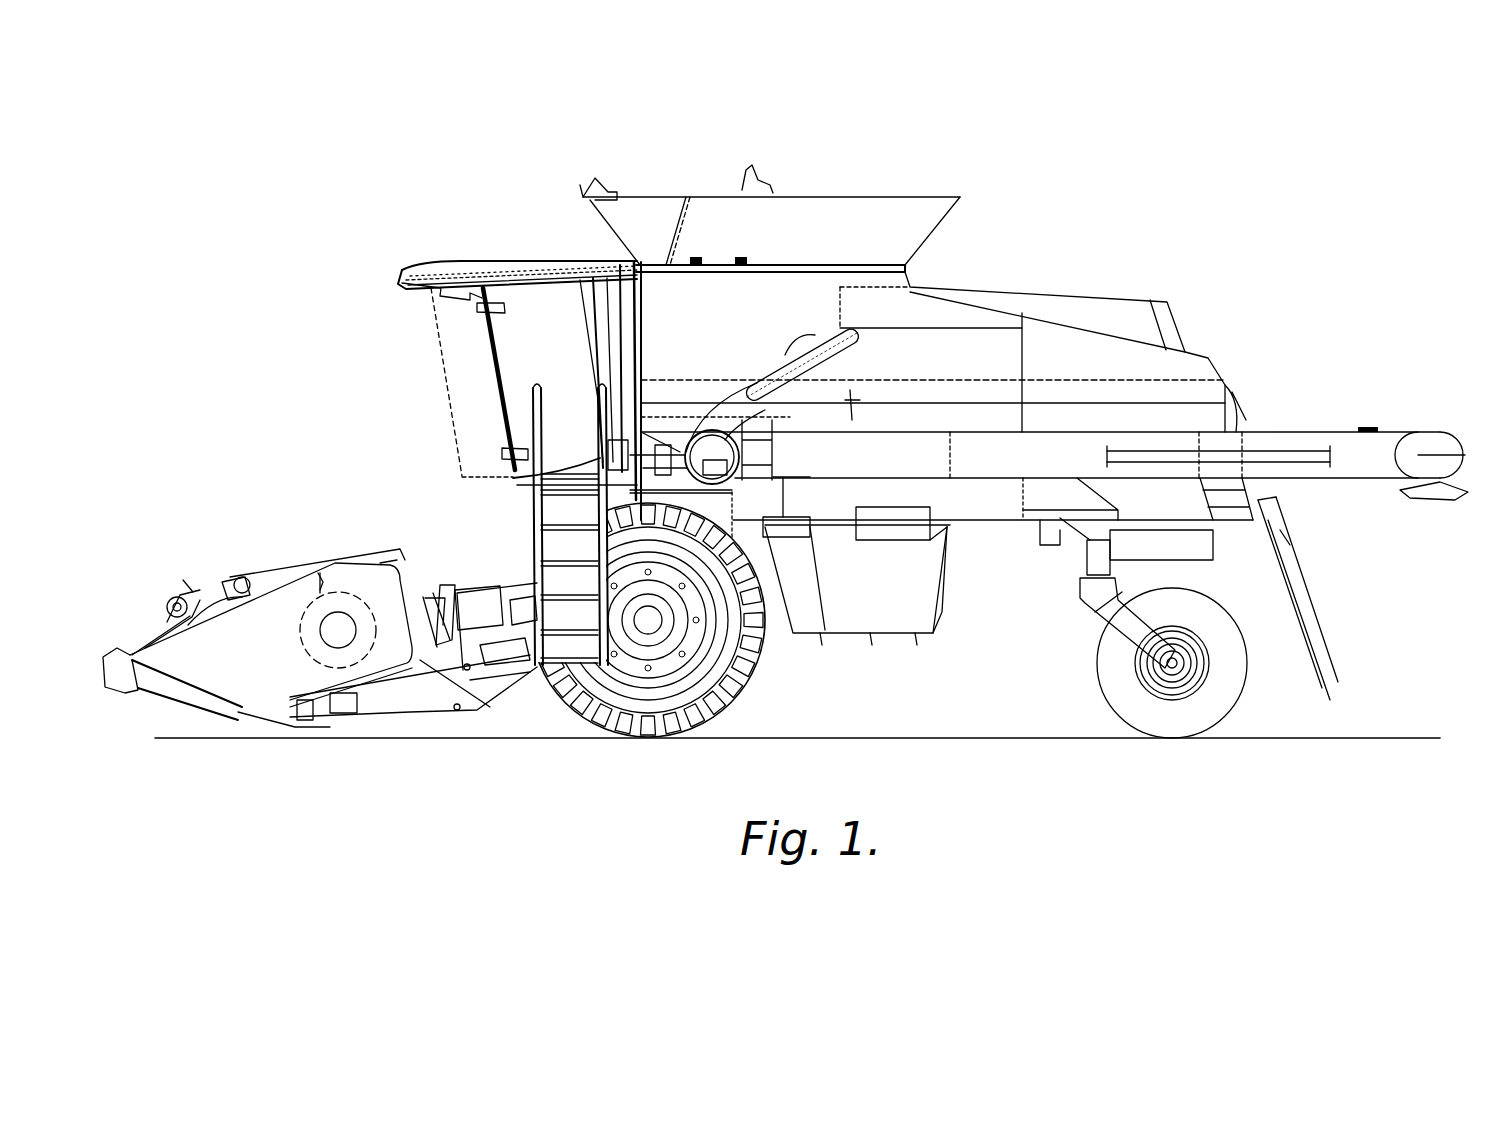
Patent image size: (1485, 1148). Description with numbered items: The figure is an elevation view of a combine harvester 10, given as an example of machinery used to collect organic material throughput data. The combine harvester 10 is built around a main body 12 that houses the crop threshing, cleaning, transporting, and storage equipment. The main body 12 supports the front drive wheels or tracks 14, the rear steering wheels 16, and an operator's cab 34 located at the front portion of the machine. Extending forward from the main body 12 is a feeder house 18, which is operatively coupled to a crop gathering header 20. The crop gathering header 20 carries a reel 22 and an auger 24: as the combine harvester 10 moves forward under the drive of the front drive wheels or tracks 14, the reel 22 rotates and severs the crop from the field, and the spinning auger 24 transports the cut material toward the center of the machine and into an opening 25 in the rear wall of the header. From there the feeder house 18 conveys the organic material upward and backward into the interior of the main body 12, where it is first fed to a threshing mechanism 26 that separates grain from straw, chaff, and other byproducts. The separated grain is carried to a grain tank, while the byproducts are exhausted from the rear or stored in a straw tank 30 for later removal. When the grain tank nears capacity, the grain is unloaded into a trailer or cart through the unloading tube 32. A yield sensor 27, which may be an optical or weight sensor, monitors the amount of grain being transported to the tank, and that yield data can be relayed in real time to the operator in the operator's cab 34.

The combine harvester 10 is at (352, 200).
The main body 12 is at (1180, 505).
The front drive wheels or tracks 14 is at (745, 680).
The rear steering wheels 16 is at (1222, 688).
The feeder house 18 is at (512, 592).
The crop gathering header 20 is at (347, 548).
The reel 22 is at (193, 592).
The auger 24 is at (317, 568).
The opening 25 is at (460, 588).
The threshing mechanism 26 is at (1030, 445).
The yield sensor 27 is at (908, 212).
The straw tank 30 is at (1152, 298).
The unloading tube 32 is at (1438, 440).
The operator's cab 34 is at (483, 290).